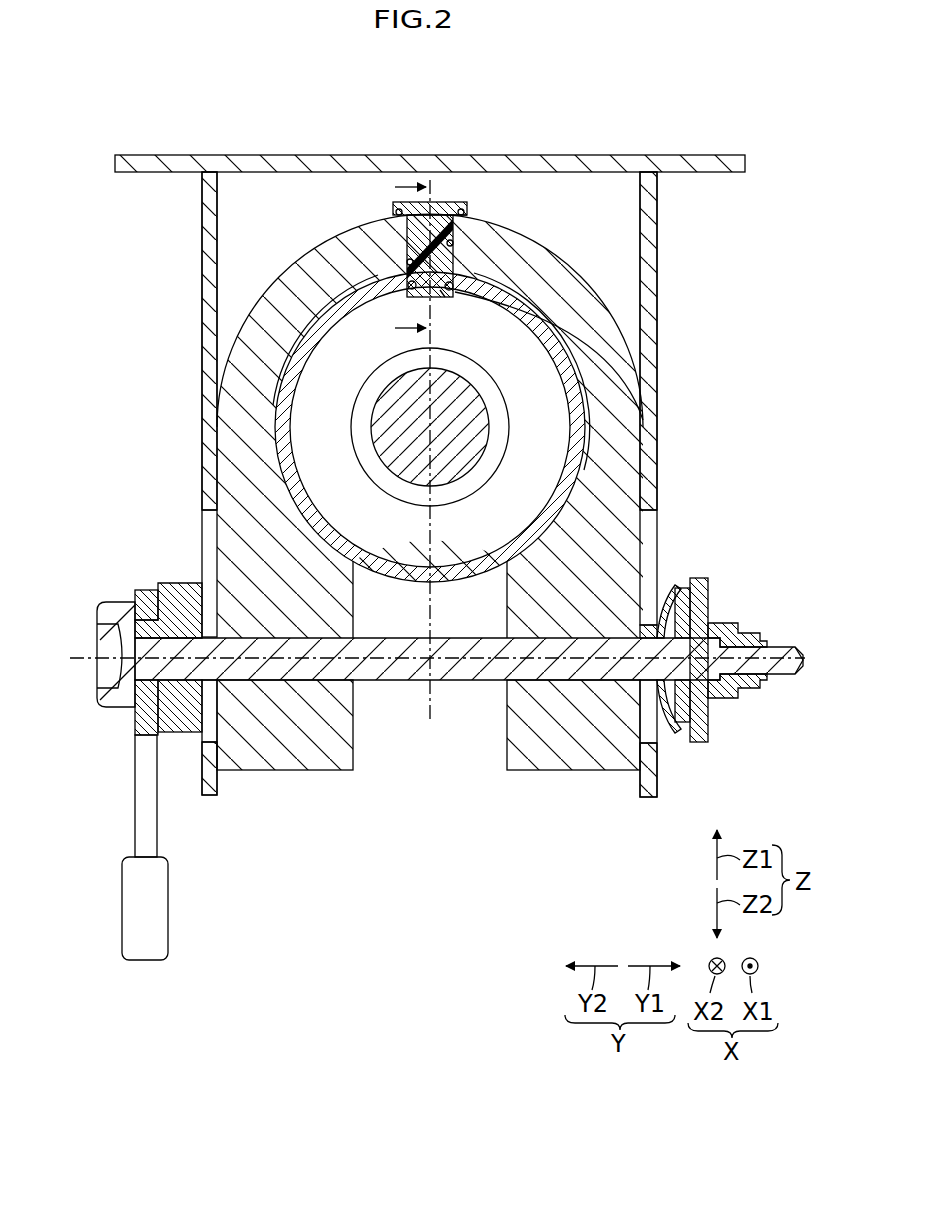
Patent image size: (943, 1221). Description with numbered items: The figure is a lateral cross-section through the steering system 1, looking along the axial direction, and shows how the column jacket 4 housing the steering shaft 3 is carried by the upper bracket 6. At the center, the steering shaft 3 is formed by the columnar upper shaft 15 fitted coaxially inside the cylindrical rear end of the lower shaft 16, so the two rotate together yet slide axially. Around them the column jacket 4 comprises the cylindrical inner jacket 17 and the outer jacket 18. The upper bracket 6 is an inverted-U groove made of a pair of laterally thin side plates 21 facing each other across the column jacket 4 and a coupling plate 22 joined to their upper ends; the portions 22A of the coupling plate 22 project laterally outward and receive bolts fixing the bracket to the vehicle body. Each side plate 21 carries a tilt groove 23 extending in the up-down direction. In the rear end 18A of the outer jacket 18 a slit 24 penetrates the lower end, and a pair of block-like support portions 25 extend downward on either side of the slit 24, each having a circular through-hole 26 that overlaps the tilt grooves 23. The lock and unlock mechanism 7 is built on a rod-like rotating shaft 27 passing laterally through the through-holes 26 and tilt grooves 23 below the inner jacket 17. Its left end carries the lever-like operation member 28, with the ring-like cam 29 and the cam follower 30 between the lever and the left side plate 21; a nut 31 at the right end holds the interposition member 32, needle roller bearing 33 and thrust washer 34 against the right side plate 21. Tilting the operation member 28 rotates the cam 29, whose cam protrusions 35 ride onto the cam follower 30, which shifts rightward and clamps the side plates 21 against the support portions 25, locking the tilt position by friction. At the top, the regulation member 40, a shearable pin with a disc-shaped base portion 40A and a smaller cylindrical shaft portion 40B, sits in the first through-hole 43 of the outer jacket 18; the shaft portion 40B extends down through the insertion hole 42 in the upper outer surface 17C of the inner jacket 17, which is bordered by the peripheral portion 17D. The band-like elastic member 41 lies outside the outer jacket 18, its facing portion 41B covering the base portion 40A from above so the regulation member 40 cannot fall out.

The steering system 1 is at (436, 950).
The steering shaft 3 is at (150, 352).
The column jacket 4 is at (712, 358).
The upper bracket 6 is at (643, 136).
The lock and unlock mechanism 7 is at (92, 590).
The upper shaft 15 is at (385, 430).
The lower shaft 16 is at (375, 398).
The inner jacket 17 is at (578, 420).
The upper, outer surface of the inner jacket 17C is at (478, 284).
The peripheral portion 17D is at (445, 298).
The outer jacket 18 is at (620, 365).
The rear end of the outer jacket 18A is at (618, 448).
The side plates 21 is at (210, 262).
The coupling plate 22 is at (580, 163).
The portions of the coupling plate 22A is at (175, 163).
The tilt groove 23 is at (208, 513).
The slit 24 is at (352, 757).
The support portions 25 is at (298, 745).
The through-hole 26 is at (270, 672).
The rotating shaft 27 is at (782, 652).
The operation member 28 is at (128, 910).
The cam 29 is at (158, 700).
The cam follower 30 is at (163, 714).
The nut 31 is at (722, 623).
The interposition member 32 is at (668, 722).
The needle roller bearing 33 is at (680, 722).
The thrust washer 34 is at (702, 706).
The cam protrusions 35 is at (180, 590).
The regulation member 40 is at (280, 185).
The base portion 40A is at (398, 212).
The shaft portion 40B is at (408, 262).
The elastic member 41 is at (436, 202).
The facing portion 41B is at (430, 249).
The insertion hole 42 is at (405, 270).
The first through-hole 43 is at (456, 227).